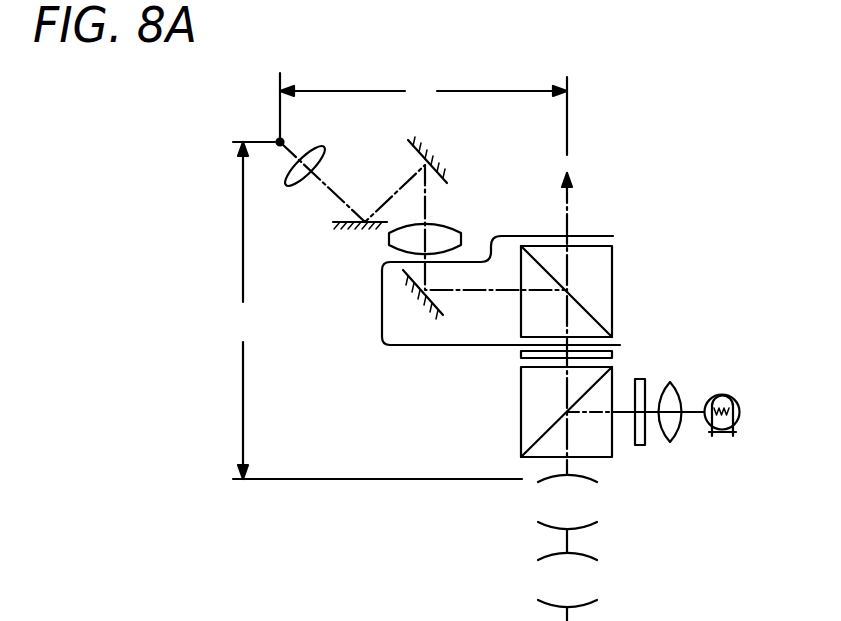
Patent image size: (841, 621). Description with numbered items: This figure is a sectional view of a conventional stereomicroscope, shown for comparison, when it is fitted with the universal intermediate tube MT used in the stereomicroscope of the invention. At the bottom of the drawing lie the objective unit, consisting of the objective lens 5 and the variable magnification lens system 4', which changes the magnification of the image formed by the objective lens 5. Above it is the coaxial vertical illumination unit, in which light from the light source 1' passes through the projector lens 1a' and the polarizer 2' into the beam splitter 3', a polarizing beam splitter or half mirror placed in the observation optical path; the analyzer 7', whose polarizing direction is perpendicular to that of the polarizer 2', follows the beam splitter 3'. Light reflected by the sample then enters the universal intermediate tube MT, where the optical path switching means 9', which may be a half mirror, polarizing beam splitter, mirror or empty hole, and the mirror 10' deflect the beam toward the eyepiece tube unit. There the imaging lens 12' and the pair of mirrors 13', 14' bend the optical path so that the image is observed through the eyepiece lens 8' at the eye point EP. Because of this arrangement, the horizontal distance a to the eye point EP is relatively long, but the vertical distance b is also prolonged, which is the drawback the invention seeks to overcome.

The eye point EP is at (278, 140).
The eyepiece lens 8' is at (298, 193).
The mirror 13' is at (397, 160).
The mirror 14' is at (337, 238).
The imaging lens 12' is at (442, 219).
The universal intermediate tube unit MT is at (600, 236).
The mirror 10' is at (451, 301).
The optical path switching means 9' is at (594, 289).
The analyzer 7' is at (539, 369).
The beam splitter 3' is at (540, 412).
The polarizer 2' is at (655, 392).
The projector lens 1a' is at (692, 396).
The light source 1' is at (738, 400).
The variable magnification lens system 4' is at (597, 502).
The objective lens 5 is at (596, 585).
The horizontal distance a is at (423, 114).
The vertical distance b is at (377, 310).